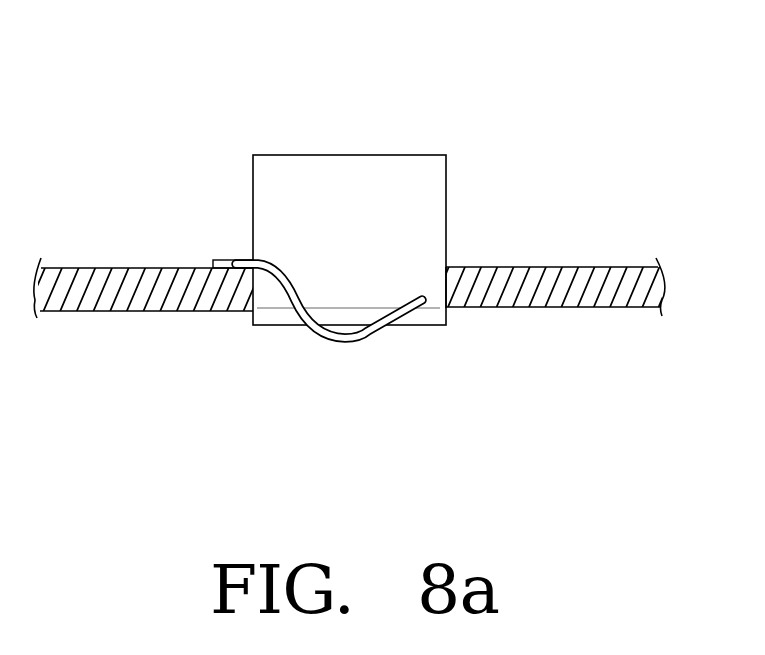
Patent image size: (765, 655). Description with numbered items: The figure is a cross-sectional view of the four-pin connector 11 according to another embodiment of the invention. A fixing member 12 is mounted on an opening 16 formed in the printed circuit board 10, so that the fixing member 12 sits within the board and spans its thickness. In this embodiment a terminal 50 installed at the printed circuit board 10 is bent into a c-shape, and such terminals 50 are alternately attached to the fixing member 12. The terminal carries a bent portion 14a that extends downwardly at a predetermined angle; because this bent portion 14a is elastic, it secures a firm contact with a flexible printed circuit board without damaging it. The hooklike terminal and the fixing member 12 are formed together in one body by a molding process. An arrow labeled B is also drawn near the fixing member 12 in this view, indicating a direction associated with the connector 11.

The printed circuit board 10 is at (108, 273).
The 4-pin connector 11 is at (243, 123).
The fixing member 12 is at (347, 157).
The bent portion 14a is at (362, 341).
The opening 16 is at (447, 307).
The terminal 50 is at (227, 258).
The insertion direction B is at (502, 192).